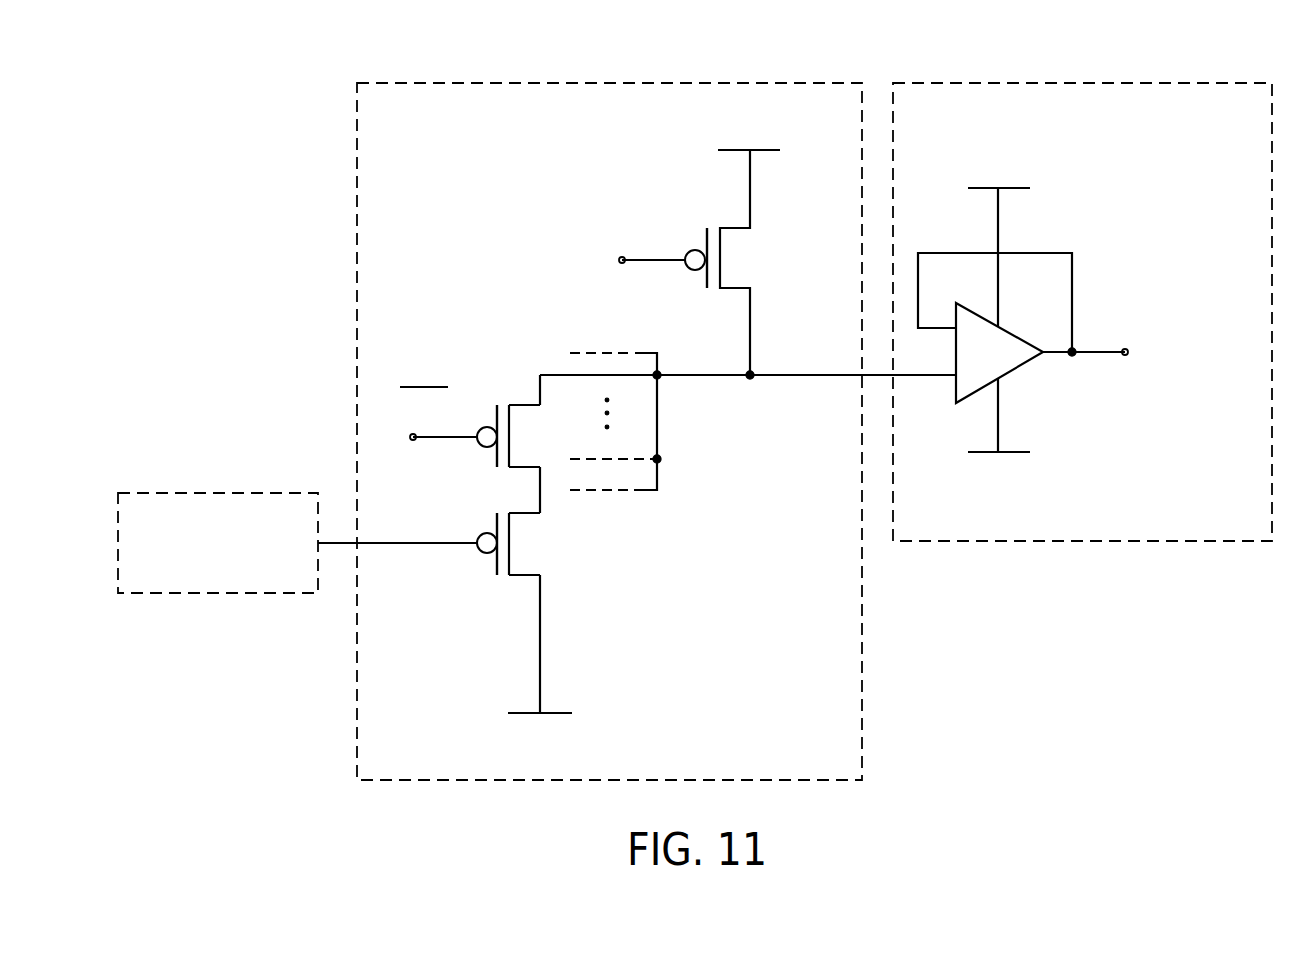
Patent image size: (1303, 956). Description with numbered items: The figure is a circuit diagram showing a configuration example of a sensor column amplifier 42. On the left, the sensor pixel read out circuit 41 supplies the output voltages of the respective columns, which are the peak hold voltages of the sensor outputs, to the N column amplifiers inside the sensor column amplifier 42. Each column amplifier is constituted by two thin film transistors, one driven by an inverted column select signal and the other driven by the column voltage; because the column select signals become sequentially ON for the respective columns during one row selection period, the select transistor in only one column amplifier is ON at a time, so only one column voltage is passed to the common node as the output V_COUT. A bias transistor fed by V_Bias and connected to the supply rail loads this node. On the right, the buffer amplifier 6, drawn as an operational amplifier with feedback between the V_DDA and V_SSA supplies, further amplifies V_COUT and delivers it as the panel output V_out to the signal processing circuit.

The sensor pixel read out circuit 41 is at (257, 493).
The sensor column amplifier 42 is at (787, 83).
The buffer amplifier 6 is at (1196, 83).